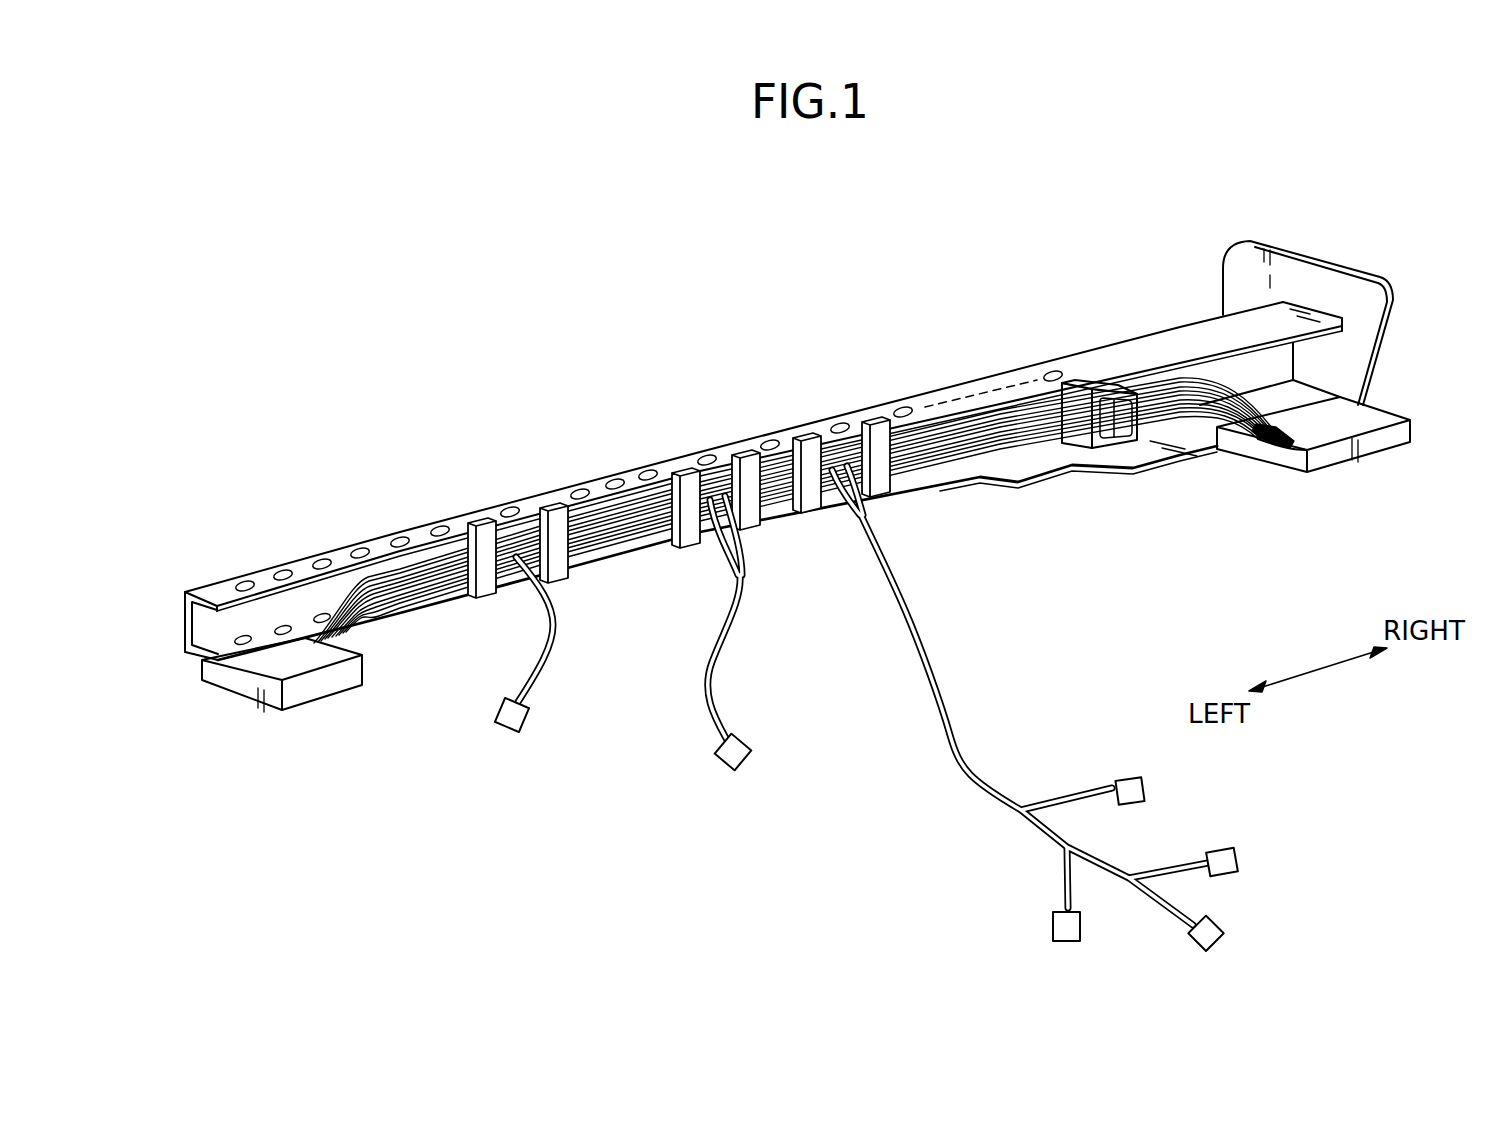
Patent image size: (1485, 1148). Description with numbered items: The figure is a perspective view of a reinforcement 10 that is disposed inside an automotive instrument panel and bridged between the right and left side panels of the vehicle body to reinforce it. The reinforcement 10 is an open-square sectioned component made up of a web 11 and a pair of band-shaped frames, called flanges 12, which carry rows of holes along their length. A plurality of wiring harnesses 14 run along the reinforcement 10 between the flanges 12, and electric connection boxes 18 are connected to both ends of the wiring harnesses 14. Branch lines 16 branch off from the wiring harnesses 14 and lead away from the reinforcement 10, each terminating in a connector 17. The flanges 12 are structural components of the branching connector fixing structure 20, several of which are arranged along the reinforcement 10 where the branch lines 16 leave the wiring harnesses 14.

The reinforcement 10 is at (968, 348).
The web 11 is at (266, 608).
The flange 12 is at (444, 527).
The wiring harness 14 is at (412, 598).
The branch line 16 is at (547, 672).
The connector 17 is at (529, 727).
The electric connection box 18 is at (234, 702).
The branching connector fixing structure 20 is at (550, 508).